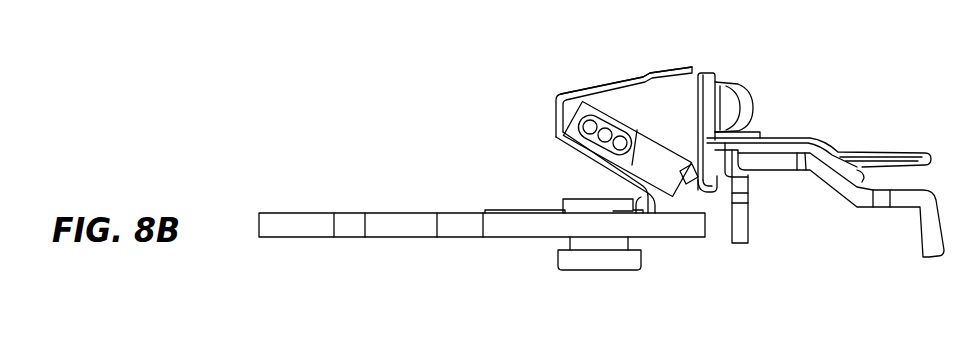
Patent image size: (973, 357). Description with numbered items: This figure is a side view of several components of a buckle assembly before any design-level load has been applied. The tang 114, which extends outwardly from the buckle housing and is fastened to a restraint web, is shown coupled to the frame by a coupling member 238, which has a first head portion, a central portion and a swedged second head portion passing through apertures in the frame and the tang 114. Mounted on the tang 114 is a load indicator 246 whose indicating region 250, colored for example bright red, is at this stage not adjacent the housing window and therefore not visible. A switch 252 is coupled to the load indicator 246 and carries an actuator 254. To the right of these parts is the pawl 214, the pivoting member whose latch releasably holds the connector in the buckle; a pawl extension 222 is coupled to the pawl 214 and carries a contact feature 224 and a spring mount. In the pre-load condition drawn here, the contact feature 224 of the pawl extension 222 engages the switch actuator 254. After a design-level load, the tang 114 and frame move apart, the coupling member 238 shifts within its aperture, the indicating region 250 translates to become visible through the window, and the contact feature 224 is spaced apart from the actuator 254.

The tang 114 is at (297, 223).
The coupling member 238 is at (572, 202).
The load indicator 246 is at (558, 113).
The indicating region 250 is at (673, 68).
The switch 252 is at (620, 118).
The actuator 254 is at (673, 190).
The pawl extension 222 is at (755, 146).
The contact feature 224 is at (697, 195).
The pawl 214 is at (834, 178).